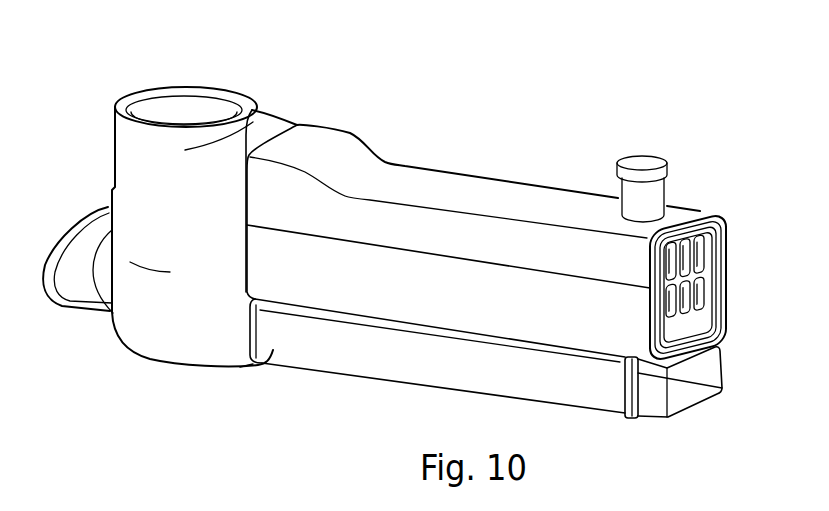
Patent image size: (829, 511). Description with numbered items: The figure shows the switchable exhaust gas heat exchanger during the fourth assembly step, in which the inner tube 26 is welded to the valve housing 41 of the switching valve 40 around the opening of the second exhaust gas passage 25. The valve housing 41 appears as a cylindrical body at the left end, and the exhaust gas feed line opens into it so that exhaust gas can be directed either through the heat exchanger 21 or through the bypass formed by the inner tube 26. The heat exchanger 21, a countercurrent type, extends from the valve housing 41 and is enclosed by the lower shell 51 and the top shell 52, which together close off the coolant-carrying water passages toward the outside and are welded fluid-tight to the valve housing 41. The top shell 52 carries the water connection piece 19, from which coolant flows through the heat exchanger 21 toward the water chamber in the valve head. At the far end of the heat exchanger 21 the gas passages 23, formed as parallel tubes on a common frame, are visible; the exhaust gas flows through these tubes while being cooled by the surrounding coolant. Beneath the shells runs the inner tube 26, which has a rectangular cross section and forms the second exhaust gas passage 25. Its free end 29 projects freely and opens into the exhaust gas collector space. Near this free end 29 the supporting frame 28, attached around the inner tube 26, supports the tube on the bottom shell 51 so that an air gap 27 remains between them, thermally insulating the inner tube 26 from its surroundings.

The water connection piece 19 is at (650, 190).
The heat exchanger 21 is at (473, 192).
The gas passages 23 is at (697, 245).
The second exhaust gas passage 25 is at (712, 289).
The inner tube 26 is at (481, 388).
The air gap 27 is at (312, 317).
The supporting frame 28 is at (635, 395).
The free end 29 is at (690, 408).
The switching valve 40 is at (170, 284).
The valve housing 41 is at (188, 208).
The lower shell 51 is at (498, 306).
The top shell 52 is at (483, 190).